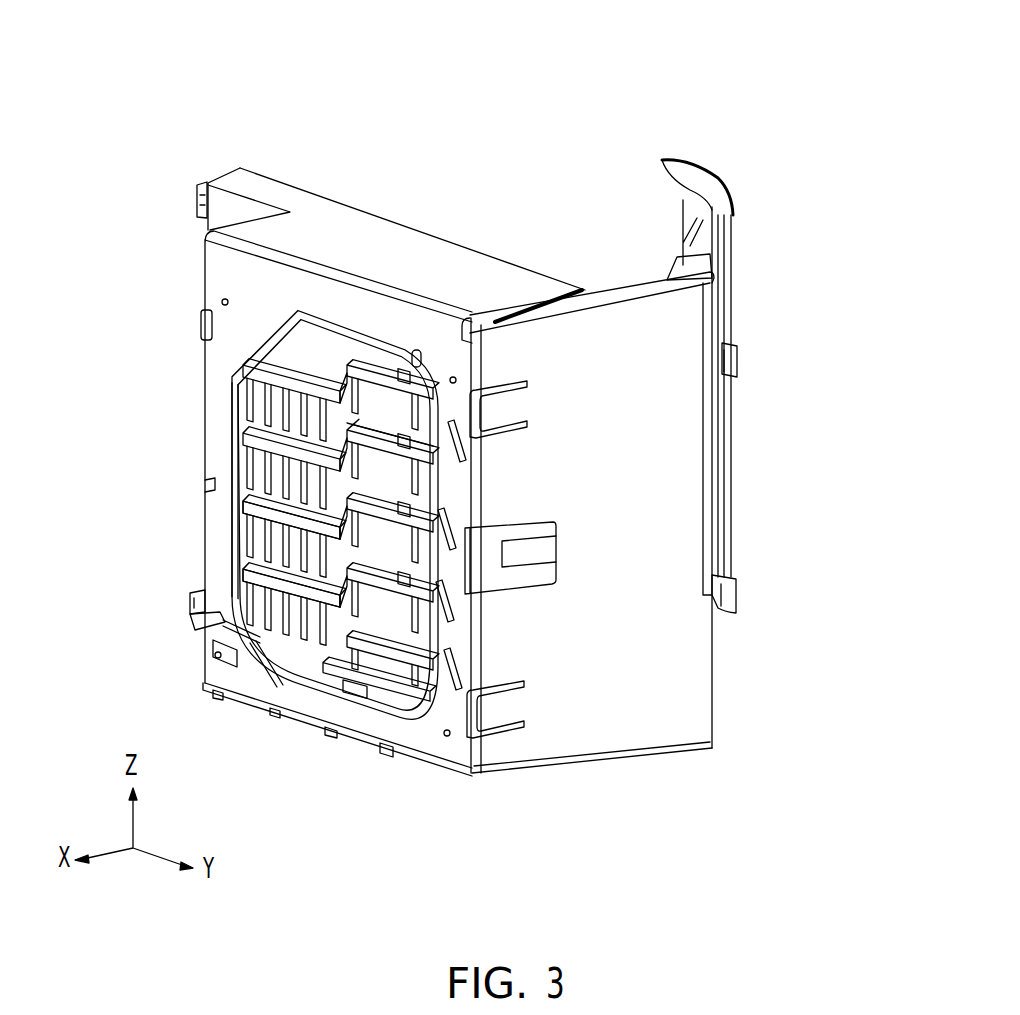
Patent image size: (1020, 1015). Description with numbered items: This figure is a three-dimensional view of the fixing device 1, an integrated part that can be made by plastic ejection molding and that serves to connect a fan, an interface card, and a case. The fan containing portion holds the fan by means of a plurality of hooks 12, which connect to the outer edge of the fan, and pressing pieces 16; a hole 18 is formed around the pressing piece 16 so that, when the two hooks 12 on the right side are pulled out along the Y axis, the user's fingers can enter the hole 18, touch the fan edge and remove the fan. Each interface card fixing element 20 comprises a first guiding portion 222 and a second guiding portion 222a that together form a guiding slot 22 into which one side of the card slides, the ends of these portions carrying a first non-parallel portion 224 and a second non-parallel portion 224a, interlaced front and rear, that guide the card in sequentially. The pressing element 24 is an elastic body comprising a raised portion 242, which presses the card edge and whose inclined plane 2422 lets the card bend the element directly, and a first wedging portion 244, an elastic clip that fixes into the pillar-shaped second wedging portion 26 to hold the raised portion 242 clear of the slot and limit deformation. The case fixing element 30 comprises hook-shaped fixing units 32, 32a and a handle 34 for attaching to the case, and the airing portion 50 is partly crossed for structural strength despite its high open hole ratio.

The fixing device 1 is at (177, 85).
The airing portion 50 is at (329, 322).
The second wedging portion 26 is at (420, 352).
The first wedging portion 244 is at (440, 373).
The handle 34 is at (713, 178).
The fixing unit 32a is at (197, 188).
The hook 12 is at (201, 320).
The interface card fixing element 20 is at (82, 420).
The second non-parallel portion 224a is at (305, 478).
The guiding slot 22 is at (122, 437).
The second guiding portion 222a is at (245, 487).
The first guiding portion 222 is at (246, 500).
The first non-parallel portion 224 is at (320, 550).
The raised portion 242 is at (418, 523).
The pressing piece 16 is at (540, 552).
The hole 18 is at (557, 580).
The pressing element 24 is at (478, 553).
The inclined plane 2422 is at (447, 622).
The fixing unit 32 is at (737, 360).
The case fixing element 30 is at (853, 107).